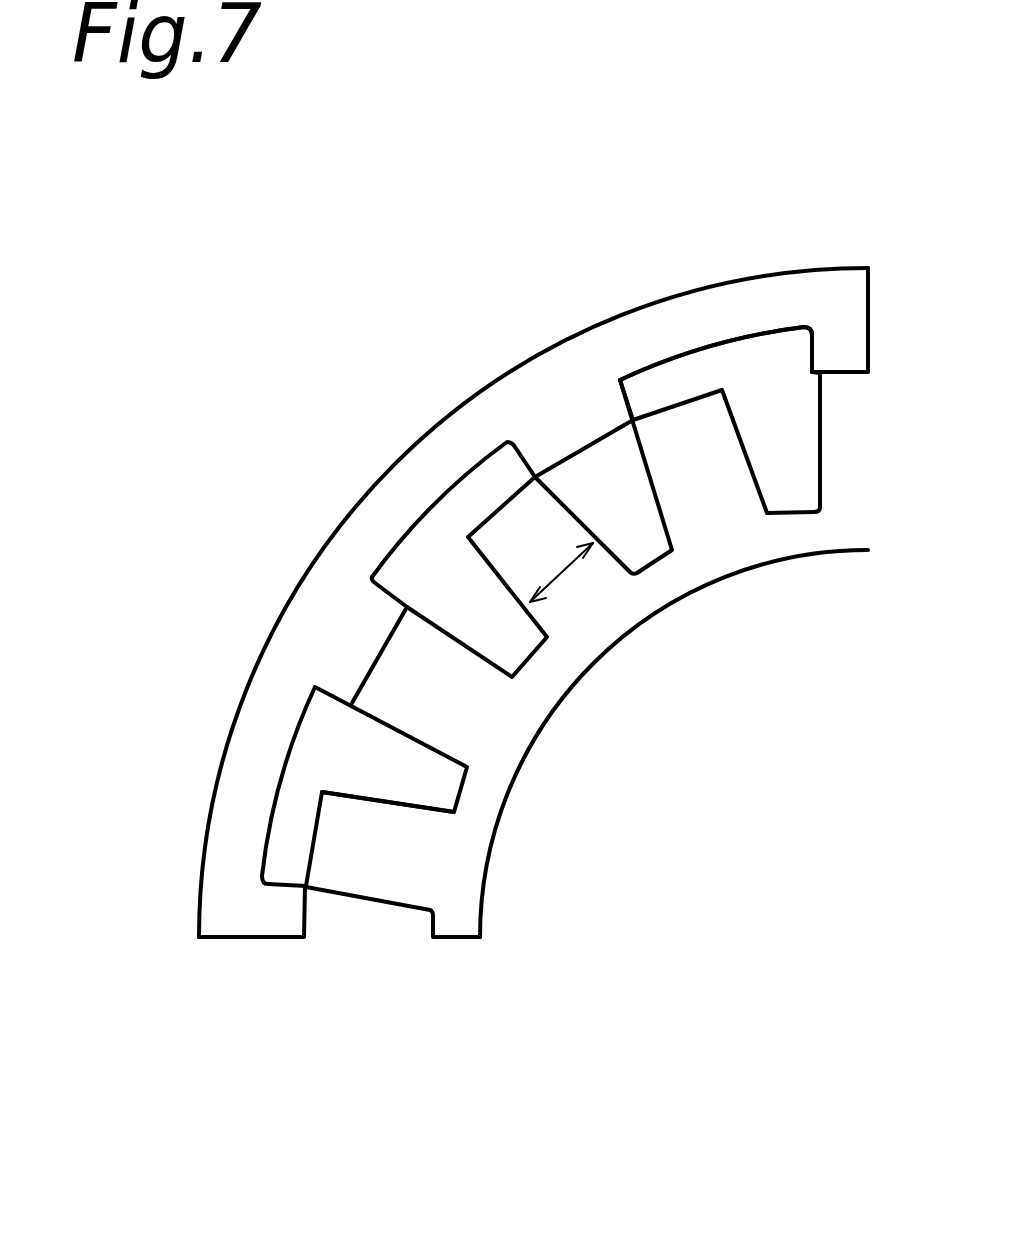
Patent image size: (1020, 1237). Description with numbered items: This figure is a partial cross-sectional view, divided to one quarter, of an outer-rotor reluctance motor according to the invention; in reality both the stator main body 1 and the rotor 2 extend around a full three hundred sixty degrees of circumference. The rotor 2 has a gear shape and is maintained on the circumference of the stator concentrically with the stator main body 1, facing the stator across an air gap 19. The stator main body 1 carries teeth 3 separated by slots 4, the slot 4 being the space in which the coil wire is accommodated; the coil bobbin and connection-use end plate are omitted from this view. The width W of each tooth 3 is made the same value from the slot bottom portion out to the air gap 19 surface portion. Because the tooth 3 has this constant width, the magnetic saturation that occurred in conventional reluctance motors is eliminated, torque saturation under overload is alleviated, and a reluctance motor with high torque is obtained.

The stator main body 1 is at (443, 632).
The rotor 2 is at (747, 307).
The tooth 3 is at (355, 865).
The slot 4 is at (660, 508).
The air gap 19 is at (317, 748).